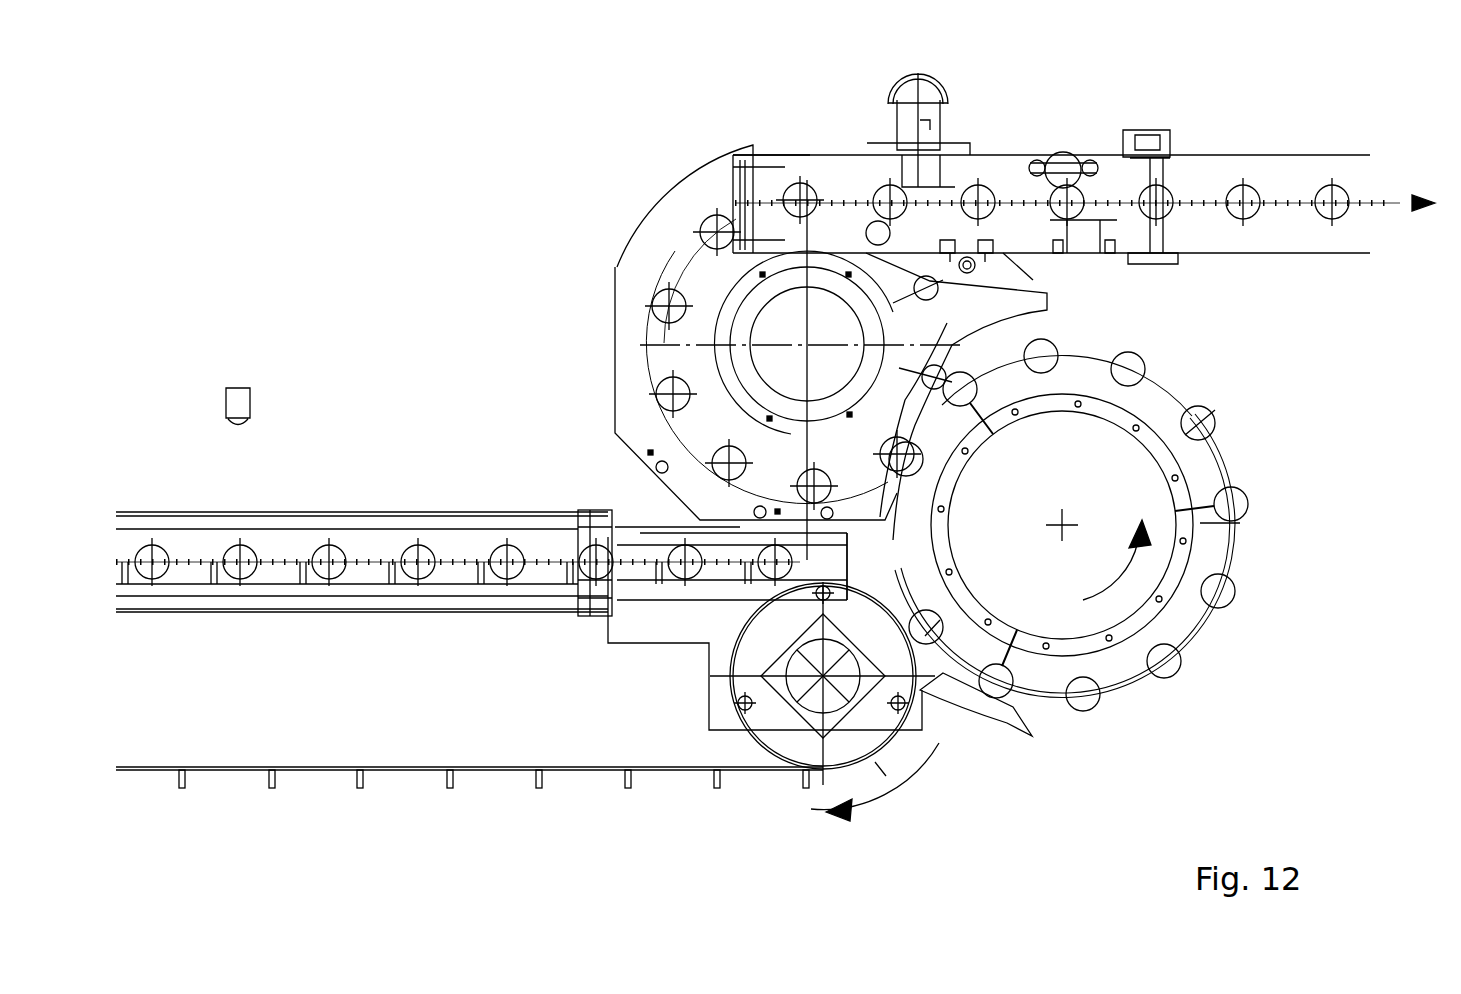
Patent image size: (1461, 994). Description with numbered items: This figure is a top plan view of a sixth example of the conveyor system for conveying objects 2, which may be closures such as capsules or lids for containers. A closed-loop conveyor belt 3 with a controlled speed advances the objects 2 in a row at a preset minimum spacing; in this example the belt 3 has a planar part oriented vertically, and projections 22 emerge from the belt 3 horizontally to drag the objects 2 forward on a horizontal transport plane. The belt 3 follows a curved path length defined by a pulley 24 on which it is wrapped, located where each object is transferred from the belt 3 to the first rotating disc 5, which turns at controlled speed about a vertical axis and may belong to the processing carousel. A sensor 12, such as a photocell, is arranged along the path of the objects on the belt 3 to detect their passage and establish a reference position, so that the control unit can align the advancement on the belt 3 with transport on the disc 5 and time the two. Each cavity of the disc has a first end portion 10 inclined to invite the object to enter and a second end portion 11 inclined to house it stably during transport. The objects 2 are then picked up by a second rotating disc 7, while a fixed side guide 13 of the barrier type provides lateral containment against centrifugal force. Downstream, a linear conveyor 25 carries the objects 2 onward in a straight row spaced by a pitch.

The objects 2 is at (146, 552).
The conveyor belt 3 is at (450, 583).
The first rotating disc 5 is at (1122, 669).
The second rotating disc 7 is at (700, 276).
The first end portion 10 is at (1193, 633).
The second end portion 11 is at (1205, 590).
The sensor 12 is at (237, 392).
The fixed side guide 13 is at (995, 718).
The projections 22 is at (182, 788).
The pulley 24 is at (795, 746).
The linear conveyor 25 is at (998, 160).